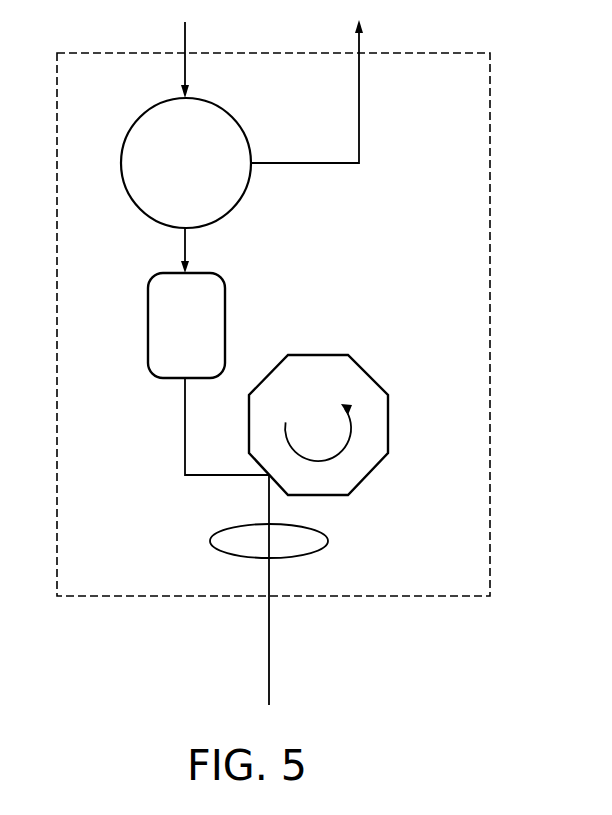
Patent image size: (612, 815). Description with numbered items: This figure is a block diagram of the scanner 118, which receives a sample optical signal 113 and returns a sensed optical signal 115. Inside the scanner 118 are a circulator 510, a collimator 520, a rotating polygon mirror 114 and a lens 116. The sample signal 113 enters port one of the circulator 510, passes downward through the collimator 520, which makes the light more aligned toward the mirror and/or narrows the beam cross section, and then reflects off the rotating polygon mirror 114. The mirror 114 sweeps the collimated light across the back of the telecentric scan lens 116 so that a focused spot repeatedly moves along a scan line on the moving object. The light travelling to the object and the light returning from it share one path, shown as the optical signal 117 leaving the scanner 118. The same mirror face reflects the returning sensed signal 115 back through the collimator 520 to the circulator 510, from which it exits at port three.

The sample optical signal 113 is at (183, 33).
The sensed optical signal 115 is at (362, 33).
The circulator 510 is at (217, 107).
The collimator 520 is at (227, 310).
The rotating polygon mirror 114 is at (390, 430).
The lens 116 is at (330, 540).
The optical signal 117 is at (272, 652).
The scanner 118 is at (492, 202).